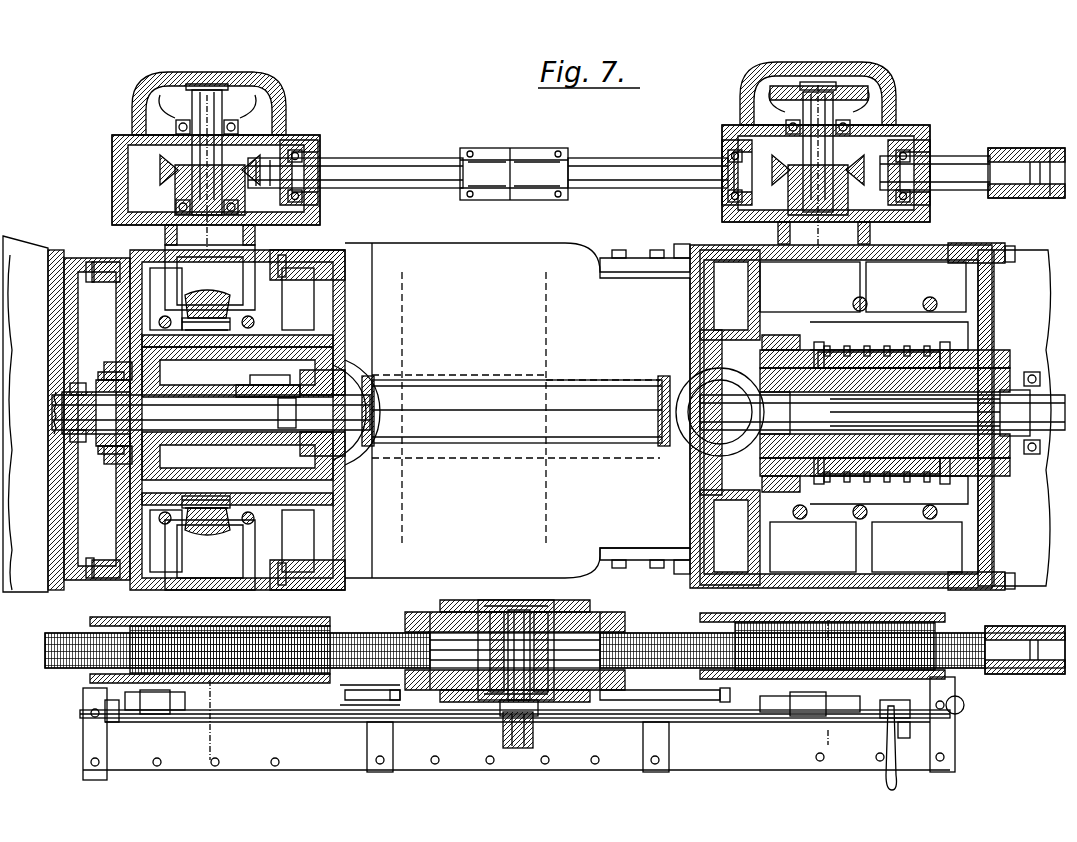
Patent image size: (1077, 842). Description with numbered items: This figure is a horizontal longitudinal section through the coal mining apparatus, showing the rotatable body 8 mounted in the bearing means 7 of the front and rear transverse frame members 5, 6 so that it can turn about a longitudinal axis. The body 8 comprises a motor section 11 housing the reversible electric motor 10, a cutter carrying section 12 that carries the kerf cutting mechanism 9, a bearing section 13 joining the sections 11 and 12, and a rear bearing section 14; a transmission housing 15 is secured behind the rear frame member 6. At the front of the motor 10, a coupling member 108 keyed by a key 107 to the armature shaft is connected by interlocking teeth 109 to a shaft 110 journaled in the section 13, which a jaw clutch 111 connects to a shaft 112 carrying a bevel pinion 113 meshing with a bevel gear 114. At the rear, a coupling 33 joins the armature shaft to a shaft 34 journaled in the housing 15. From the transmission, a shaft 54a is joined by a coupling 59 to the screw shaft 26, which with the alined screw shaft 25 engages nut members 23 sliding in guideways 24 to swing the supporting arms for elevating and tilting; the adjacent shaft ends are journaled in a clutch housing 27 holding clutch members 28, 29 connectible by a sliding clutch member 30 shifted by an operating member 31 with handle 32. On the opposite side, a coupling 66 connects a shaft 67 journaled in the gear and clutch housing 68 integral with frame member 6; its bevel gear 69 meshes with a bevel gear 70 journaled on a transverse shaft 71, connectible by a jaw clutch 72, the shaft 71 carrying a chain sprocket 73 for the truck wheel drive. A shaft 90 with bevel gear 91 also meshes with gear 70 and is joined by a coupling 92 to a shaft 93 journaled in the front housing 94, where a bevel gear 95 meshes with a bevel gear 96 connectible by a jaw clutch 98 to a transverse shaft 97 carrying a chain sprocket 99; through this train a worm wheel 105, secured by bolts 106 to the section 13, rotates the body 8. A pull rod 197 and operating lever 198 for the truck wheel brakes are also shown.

The transverse frame member 5 is at (160, 290).
The transverse frame member 6 is at (856, 290).
The bearing means 7 is at (150, 326).
The body 8 is at (207, 95).
The kerf cutting mechanism 9 is at (818, 85).
The motor 10 is at (502, 360).
The motor section 11 is at (500, 250).
The cutter carrying section 12 is at (72, 262).
The bearing section 13 is at (300, 252).
The bearing section 14 is at (794, 332).
The transmission housing 15 is at (1020, 282).
The nut member 23 is at (228, 630).
The guideway 24 is at (148, 630).
The screw shaft 25 is at (135, 632).
The screw shaft 26 is at (960, 634).
The clutch housing 27 is at (430, 602).
The clutch member 28 is at (490, 700).
The clutch member 29 is at (540, 702).
The sliding clutch member 30 is at (552, 600).
The operating member 31 is at (506, 702).
The operating handle 32 is at (520, 750).
The coupling 33 is at (810, 392).
The shaft 34 is at (930, 392).
The longitudinally extending shaft 54a is at (1040, 660).
The coupling 59 is at (1030, 665).
The coupling 66 is at (1020, 152).
The shaft 67 is at (958, 158).
The gear and clutch housing 68 is at (896, 125).
The bevel gear 69 is at (906, 140).
The bevel gear 70 is at (872, 110).
The transverse shaft 71 is at (760, 100).
The jaw clutch 72 is at (922, 195).
The chain sprocket 73 is at (778, 92).
The shaft 90 is at (640, 160).
The bevel gear 91 is at (740, 130).
The coupling 92 is at (506, 150).
The shaft 93 is at (408, 160).
The gear and clutch housing 94 is at (290, 135).
The bevel gear 95 is at (302, 152).
The bevel gear 96 is at (262, 112).
The transverse shaft 97 is at (150, 125).
The jaw clutch 98 is at (170, 192).
The chain sprocket 99 is at (240, 100).
The worm wheel 105 is at (205, 298).
The bolts 106 is at (208, 520).
The key 107 is at (330, 395).
The coupling member 108 is at (252, 394).
The interlocking teeth 109 is at (245, 440).
The shaft 110 is at (180, 395).
The jaw clutch 111 is at (108, 454).
The shaft 112 is at (92, 450).
The bevel pinion 113 is at (60, 392).
The bevel gear 114 is at (56, 414).
The pull rod 197 is at (728, 716).
The operating lever 198 is at (962, 708).